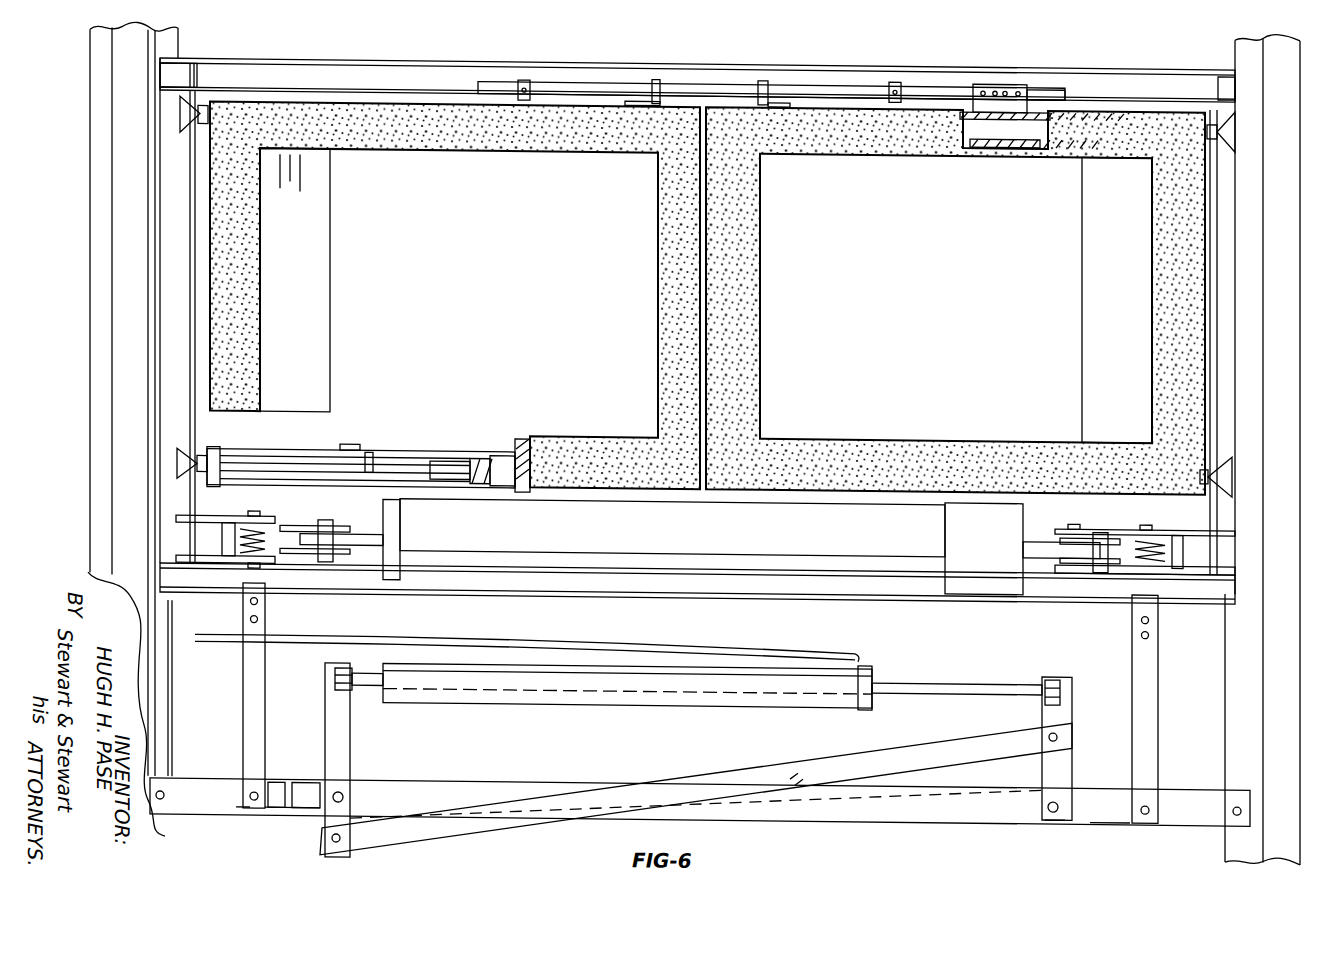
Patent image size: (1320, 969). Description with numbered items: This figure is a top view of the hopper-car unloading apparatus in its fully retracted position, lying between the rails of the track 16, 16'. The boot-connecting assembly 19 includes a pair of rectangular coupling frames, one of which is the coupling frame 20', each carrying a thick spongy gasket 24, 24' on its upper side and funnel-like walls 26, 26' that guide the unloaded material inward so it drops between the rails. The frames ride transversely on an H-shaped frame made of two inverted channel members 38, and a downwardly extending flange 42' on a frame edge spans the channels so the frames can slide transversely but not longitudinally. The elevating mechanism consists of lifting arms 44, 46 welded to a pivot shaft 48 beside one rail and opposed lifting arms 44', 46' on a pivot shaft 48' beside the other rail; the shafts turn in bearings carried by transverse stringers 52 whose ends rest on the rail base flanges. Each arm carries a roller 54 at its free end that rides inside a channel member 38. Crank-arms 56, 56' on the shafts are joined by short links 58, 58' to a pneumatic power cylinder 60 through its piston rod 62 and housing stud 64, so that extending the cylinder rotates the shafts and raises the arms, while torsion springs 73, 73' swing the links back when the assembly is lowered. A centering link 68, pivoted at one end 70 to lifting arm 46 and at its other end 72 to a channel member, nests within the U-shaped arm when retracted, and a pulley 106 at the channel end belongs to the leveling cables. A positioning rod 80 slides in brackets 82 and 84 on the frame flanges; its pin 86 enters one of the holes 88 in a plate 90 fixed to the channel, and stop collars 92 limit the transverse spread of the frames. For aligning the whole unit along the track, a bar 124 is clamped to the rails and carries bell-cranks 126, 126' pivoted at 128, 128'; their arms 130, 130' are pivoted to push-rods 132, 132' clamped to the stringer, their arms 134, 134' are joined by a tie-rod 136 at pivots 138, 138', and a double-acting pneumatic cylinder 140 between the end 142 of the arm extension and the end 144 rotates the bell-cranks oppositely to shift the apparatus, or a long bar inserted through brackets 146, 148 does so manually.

The track 16 is at (115, 428).
The rail 16' is at (1262, 449).
The boot-connecting assembly 19 is at (210, 222).
The coupling frame 20' is at (726, 265).
The spongy gasket 24 is at (455, 296).
The spongy gasket 24' is at (955, 301).
The funnel-like wall 26 is at (295, 280).
The funnel-like wall 26' is at (1117, 300).
The inverted channel member 38 is at (1012, 140).
The downwardly extending flange 42' is at (1077, 70).
The lifting arm 44 is at (210, 80).
The lifting arm 44' is at (1218, 92).
The lifting arm 46 is at (327, 438).
The lifting arm 46' is at (1246, 465).
The pivot shaft 48 is at (142, 402).
The pivot shaft 48' is at (1253, 343).
The transverse stringer 52 is at (400, 67).
The roller 54 is at (485, 452).
The crank-arm 56 is at (225, 526).
The crank-arm 56' is at (1173, 538).
The intermediate short link 58 is at (325, 527).
The intermediate short link 58' is at (1091, 535).
The pneumatic power cylinder 60 is at (688, 535).
The piston rod 62 is at (400, 532).
The housing stud 64 is at (1040, 532).
The centering link 68 is at (300, 462).
The end of centering link 70 is at (370, 450).
The end of centering link 72 is at (228, 450).
The torsion spring 73 is at (266, 525).
The torsion spring 73' is at (1165, 536).
The positioning rod 80 is at (920, 80).
The bracket 82 is at (768, 73).
The bracket 84 is at (656, 73).
The pin 86 is at (1000, 74).
The holes 88 is at (984, 80).
The plate 90 is at (1020, 80).
The stop collar 92 is at (524, 75).
The pulley 106 is at (352, 442).
The bar 124 is at (838, 806).
The bell-crank 126 is at (223, 827).
The bell-crank 126' is at (1049, 840).
The pivot 128 is at (369, 775).
The pivot 128' is at (1024, 802).
The arm of bell-crank 130 is at (282, 829).
The arm of bell-crank 130' is at (1123, 842).
The push-rod 132 is at (233, 695).
The push-rod 132' is at (1179, 709).
The arm of bell-crank 134 is at (696, 789).
The arm of bell-crank 134' is at (1085, 749).
The tie-rod 136 is at (777, 768).
The pivot 138 is at (312, 763).
The pivot 138' is at (1092, 722).
The double-acting pneumatic cylinder 140 is at (680, 700).
The outer end of arm extension 142 is at (335, 675).
The end of arm 144 is at (1062, 680).
The bracket 146 is at (274, 781).
The bracket 148 is at (314, 781).